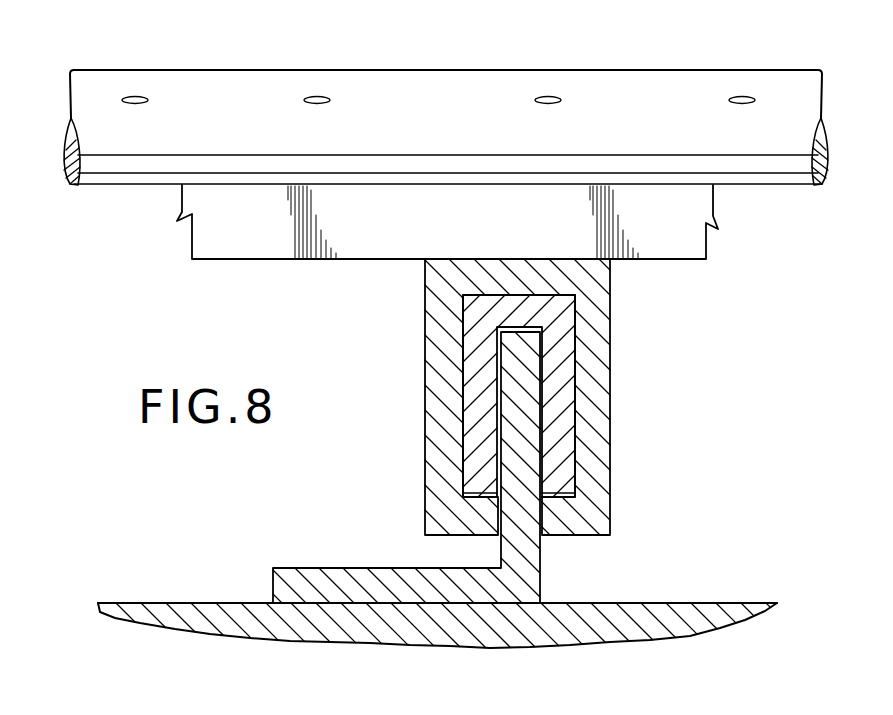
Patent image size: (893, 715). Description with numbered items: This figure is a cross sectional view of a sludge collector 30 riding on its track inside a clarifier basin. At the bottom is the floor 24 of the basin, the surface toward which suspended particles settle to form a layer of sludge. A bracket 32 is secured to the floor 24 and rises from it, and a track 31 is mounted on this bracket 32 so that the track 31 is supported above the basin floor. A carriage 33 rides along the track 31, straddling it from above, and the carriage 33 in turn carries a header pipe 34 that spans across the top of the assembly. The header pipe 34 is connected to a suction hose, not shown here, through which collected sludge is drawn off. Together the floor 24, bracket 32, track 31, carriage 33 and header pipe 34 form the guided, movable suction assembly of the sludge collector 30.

The second sludge collector 30 is at (135, 52).
The header pipe 34 is at (727, 70).
The carriage 33 is at (688, 251).
The track 31 is at (630, 397).
The bracket 32 is at (533, 575).
The floor 24 is at (705, 603).